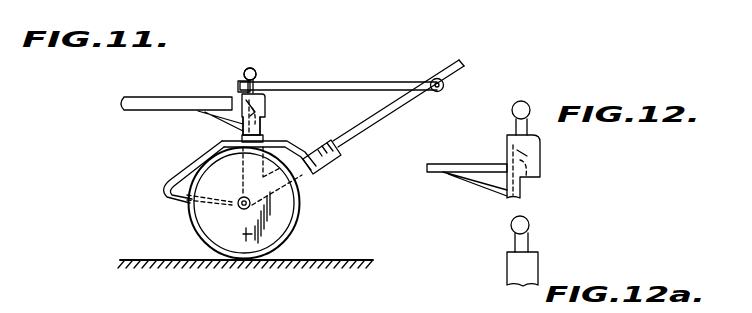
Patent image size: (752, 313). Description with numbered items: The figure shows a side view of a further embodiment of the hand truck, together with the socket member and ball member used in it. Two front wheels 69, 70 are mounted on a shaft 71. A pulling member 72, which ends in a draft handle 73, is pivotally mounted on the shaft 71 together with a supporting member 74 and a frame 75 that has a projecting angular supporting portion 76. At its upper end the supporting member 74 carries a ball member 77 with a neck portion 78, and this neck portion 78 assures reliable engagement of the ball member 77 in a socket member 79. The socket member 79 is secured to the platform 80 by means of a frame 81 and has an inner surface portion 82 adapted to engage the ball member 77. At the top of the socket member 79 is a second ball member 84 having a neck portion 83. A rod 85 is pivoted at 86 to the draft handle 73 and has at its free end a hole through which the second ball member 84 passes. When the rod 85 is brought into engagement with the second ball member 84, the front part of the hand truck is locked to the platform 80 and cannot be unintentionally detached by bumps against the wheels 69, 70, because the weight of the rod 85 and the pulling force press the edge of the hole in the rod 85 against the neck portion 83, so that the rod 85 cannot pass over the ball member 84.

In FIG. 11, the front wheel 69 is at (283, 216).
In FIG. 11, the front wheel 70 is at (272, 237).
In FIG. 11, the shaft 71 is at (233, 208).
In FIG. 11, the pulling member 72 is at (306, 175).
In FIG. 11, the draft handle 73 is at (387, 117).
In FIG. 11, the supporting member 74 is at (264, 138).
In FIG. 12A, the supporting member 74 is at (512, 262).
In FIG. 11, the frame 75 is at (183, 165).
In FIG. 11, the projecting angular supporting portion 76 is at (158, 184).
In FIG. 11, the ball member 77 is at (239, 95).
In FIG. 12A, the ball member 77 is at (530, 231).
In FIG. 11, the neck portion 78 is at (236, 129).
In FIG. 12A, the neck portion 78 is at (531, 244).
In FIG. 11, the socket member 79 is at (263, 95).
In FIG. 12, the socket member 79 is at (517, 148).
In FIG. 11, the platform 80 is at (134, 96).
In FIG. 11, the frame 81 is at (171, 118).
In FIG. 12, the frame 81 is at (444, 171).
In FIG. 11, the inner surface portion 82 is at (266, 107).
In FIG. 12, the inner surface portion 82 is at (541, 159).
In FIG. 11, the neck portion 83 is at (262, 88).
In FIG. 12, the neck portion 83 is at (530, 128).
In FIG. 11, the second ball member 84 is at (258, 50).
In FIG. 12, the second ball member 84 is at (525, 103).
In FIG. 11, the rod 85 is at (362, 82).
In FIG. 11, the pivot 86 is at (434, 78).